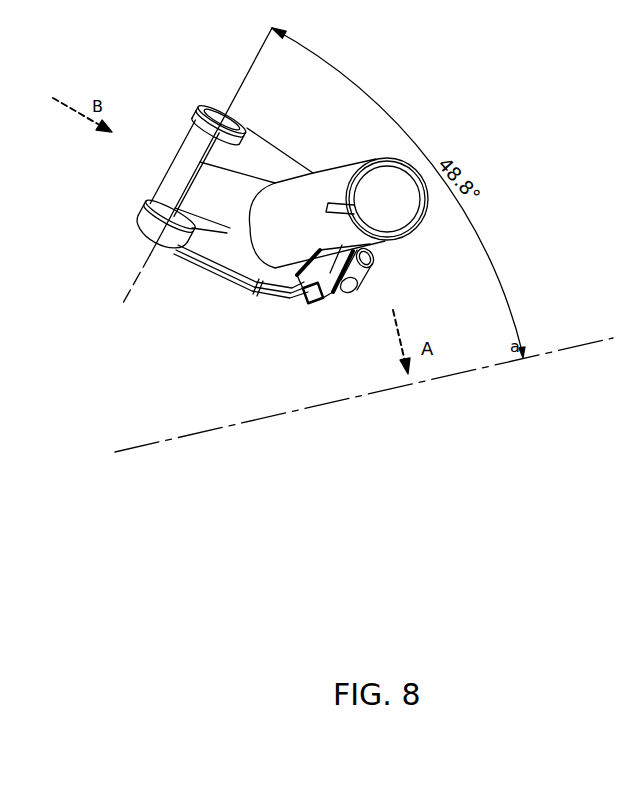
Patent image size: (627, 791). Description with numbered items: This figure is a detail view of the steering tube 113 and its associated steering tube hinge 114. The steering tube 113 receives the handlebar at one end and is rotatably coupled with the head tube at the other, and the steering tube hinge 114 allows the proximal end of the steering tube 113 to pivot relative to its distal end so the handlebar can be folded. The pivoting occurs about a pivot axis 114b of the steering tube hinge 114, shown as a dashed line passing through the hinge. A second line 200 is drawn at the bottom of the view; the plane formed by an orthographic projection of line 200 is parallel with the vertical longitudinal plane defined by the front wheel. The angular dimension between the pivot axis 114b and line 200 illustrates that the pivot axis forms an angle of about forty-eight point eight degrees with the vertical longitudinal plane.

The steering tube 113 is at (455, 253).
The steering tube hinge 114 is at (186, 85).
The pivot axis 114b is at (112, 336).
The line 200 is at (458, 425).